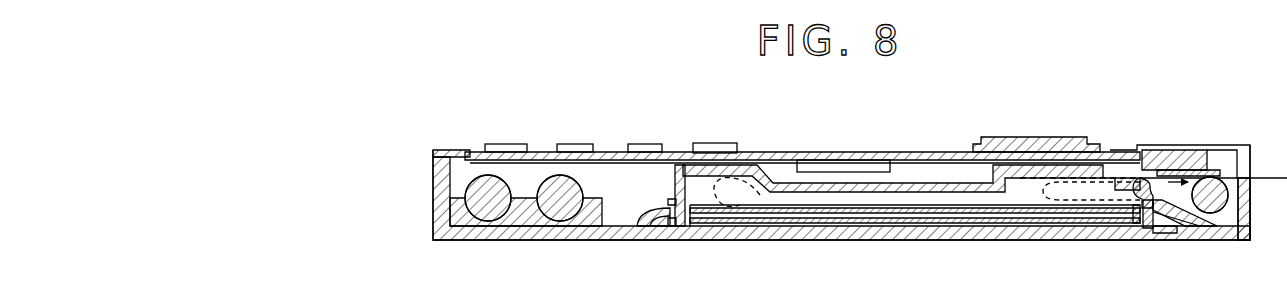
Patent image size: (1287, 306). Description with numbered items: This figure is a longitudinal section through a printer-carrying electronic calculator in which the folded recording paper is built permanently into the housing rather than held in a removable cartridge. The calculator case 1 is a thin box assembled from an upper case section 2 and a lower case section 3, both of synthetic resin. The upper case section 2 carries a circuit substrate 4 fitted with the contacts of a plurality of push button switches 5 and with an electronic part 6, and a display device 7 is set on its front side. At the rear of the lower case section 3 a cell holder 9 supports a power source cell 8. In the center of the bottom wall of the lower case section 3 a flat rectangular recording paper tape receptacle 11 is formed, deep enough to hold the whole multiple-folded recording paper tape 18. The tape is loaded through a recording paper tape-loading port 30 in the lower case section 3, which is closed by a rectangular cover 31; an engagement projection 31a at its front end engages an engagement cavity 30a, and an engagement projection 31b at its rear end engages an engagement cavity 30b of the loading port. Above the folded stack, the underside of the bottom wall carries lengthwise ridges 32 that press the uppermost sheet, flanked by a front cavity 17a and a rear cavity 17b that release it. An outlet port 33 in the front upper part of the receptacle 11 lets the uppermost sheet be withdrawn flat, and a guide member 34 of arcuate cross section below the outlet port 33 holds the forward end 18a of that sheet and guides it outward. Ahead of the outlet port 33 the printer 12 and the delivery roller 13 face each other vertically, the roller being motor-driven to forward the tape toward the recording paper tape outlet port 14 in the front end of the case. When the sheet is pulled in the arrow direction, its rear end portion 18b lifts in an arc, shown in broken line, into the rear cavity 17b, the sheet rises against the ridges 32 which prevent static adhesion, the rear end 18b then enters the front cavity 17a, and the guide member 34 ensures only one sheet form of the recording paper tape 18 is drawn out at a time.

The calculator case 1 is at (428, 175).
The upper case section 2 is at (441, 152).
The lower case section 3 is at (433, 208).
The circuit substrate 4 is at (786, 153).
The push button switches 5 is at (640, 144).
The electronic part 6 is at (860, 165).
The display device 7 is at (1053, 148).
The power source cell 8 is at (548, 205).
The cell holder 9 is at (627, 215).
The recording paper tape receptacle 11 is at (707, 195).
The printer 12 is at (1200, 170).
The delivery roller 13 is at (1226, 205).
The recording paper tape outlet port 14 is at (1244, 152).
The front cavity 17a is at (1007, 180).
The rear cavity 17b is at (693, 178).
The recording paper tape 18 is at (920, 224).
The forward end of uppermost sheet form 18a is at (1138, 210).
The rear end portion of uppermost sheet form 18b is at (733, 198).
The recording paper tape-loading port 30 is at (1157, 234).
The front engagement cavity 30a is at (1165, 230).
The rear engagement cavity 30b is at (672, 228).
The cover 31 is at (820, 226).
The front engagement projection 31a is at (1147, 208).
The rear engagement projection 31b is at (670, 201).
The ridges 32 is at (936, 184).
The outlet port 33 is at (1132, 180).
The guide member 34 is at (1148, 196).